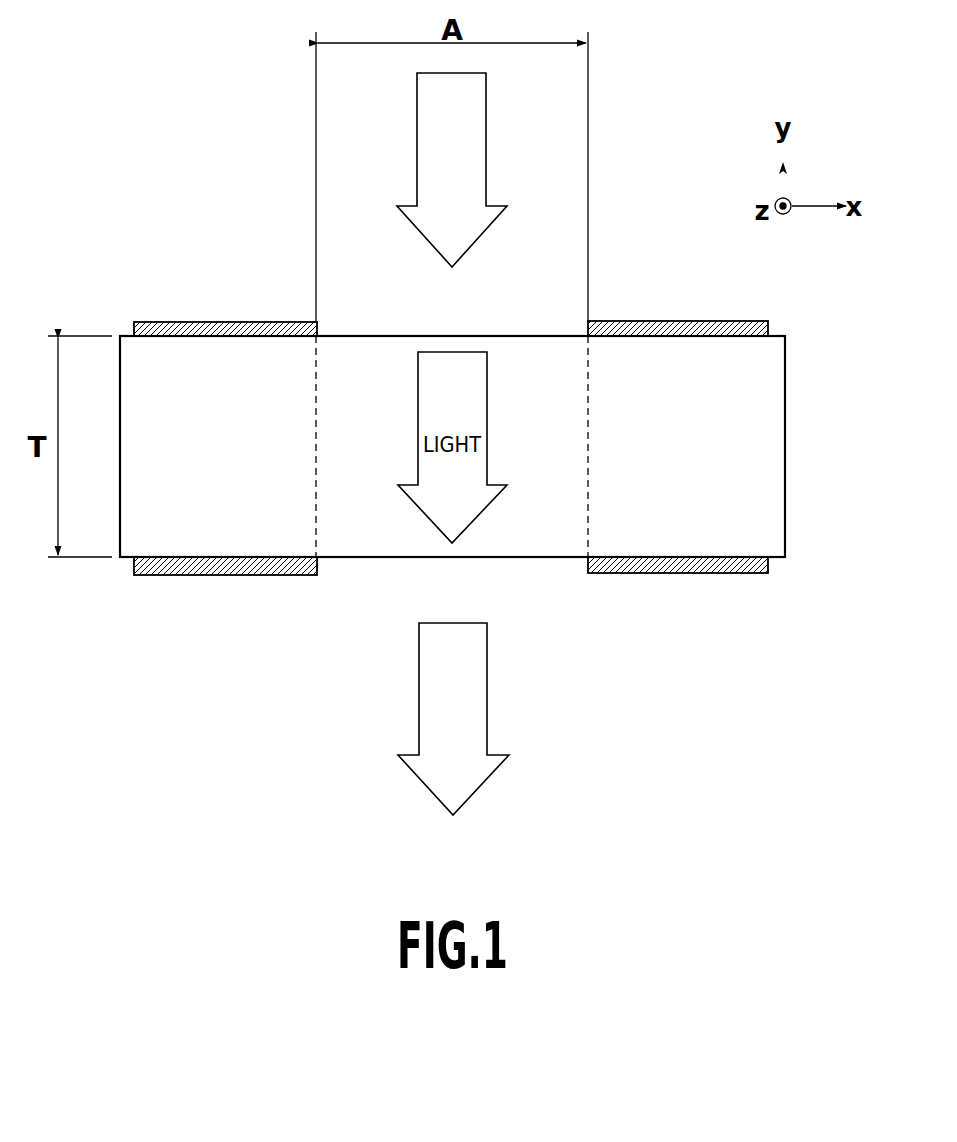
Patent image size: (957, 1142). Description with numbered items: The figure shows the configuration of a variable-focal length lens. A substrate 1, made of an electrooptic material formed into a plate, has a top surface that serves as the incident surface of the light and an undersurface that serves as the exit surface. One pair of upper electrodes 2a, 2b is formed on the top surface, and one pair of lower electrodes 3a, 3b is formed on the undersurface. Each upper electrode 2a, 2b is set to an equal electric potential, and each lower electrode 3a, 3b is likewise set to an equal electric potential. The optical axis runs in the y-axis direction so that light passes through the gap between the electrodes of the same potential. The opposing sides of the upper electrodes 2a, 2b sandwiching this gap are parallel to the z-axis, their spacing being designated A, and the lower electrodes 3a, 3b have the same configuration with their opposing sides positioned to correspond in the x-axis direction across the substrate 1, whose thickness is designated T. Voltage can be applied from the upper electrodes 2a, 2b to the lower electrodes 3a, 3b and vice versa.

The substrate 1 is at (765, 446).
The upper electrode 2a is at (218, 320).
The upper electrode 2b is at (682, 319).
The lower electrode 3a is at (217, 578).
The lower electrode 3b is at (683, 576).